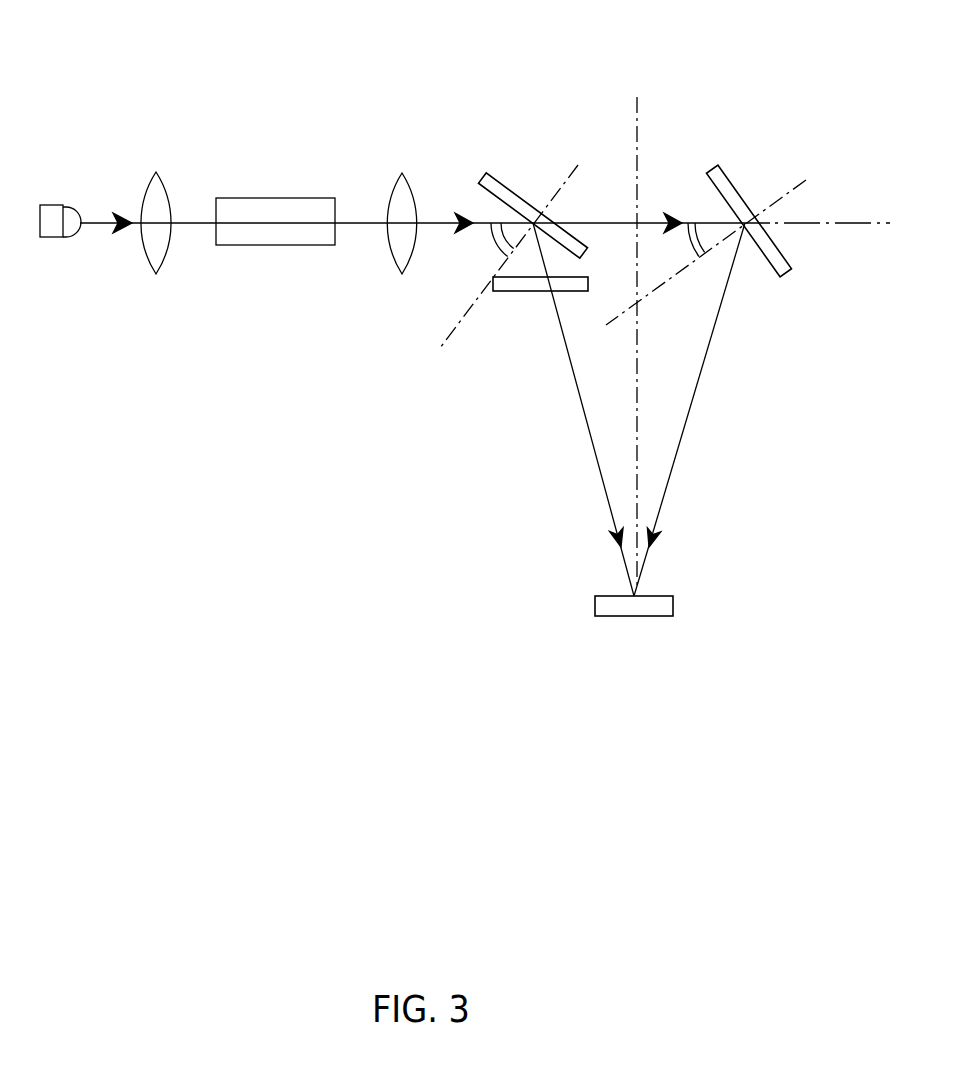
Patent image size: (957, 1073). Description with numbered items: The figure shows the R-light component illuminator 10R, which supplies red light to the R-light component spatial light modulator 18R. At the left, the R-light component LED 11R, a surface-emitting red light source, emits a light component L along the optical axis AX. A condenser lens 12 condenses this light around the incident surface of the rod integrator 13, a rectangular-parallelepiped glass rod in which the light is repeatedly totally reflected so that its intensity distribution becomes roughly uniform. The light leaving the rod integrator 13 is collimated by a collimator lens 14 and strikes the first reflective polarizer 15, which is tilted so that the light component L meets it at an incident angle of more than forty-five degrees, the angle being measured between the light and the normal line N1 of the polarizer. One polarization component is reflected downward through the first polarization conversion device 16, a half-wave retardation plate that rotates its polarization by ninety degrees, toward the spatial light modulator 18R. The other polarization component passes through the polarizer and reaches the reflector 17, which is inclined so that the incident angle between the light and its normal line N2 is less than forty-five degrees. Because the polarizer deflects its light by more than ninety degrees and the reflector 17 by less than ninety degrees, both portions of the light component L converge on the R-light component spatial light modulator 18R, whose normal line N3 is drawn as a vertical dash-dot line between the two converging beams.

The R-light component illuminator 10R is at (352, 400).
The R-light component LED 11R is at (66, 205).
The condenser lens 12 is at (156, 193).
The rod integrator 13 is at (268, 213).
The collimator lens 14 is at (403, 193).
The first reflective polarizer 15 is at (500, 180).
The first polarization conversion device 16 is at (508, 288).
The reflector 17 is at (725, 183).
The R-light component spatial light modulator 18R is at (600, 610).
The light component L is at (100, 226).
The optical axis AX is at (867, 225).
The normal line of the first reflective polarizer N1 is at (565, 182).
The normal line of the reflector N2 is at (793, 183).
The normal of detector N3 is at (638, 105).